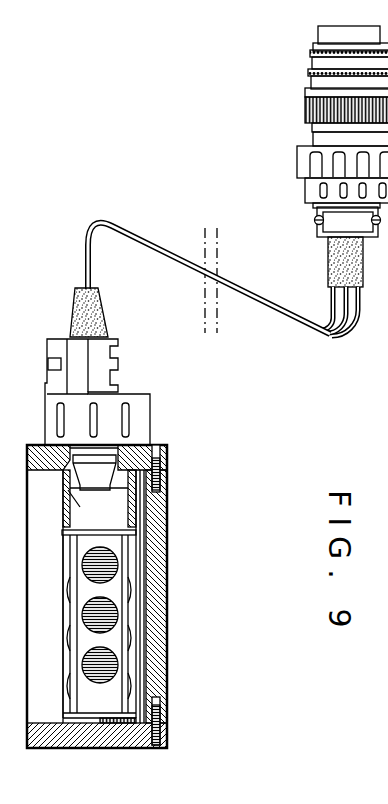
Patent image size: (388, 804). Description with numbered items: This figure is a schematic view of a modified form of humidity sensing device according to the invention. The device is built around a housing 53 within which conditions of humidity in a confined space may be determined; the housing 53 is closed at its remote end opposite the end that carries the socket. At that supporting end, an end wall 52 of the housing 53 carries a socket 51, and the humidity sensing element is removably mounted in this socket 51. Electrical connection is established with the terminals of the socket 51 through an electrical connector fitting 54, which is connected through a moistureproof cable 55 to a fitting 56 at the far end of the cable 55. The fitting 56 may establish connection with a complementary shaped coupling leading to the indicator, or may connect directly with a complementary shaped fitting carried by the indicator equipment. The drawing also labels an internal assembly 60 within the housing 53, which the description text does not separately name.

The socket 51 is at (50, 445).
The end wall 52 is at (168, 464).
The housing 53 is at (167, 647).
The electrical connector fitting 54 is at (131, 351).
The moistureproof cable 55 is at (160, 238).
The fitting 56 is at (288, 110).
The ball tube assembly 60 is at (135, 553).